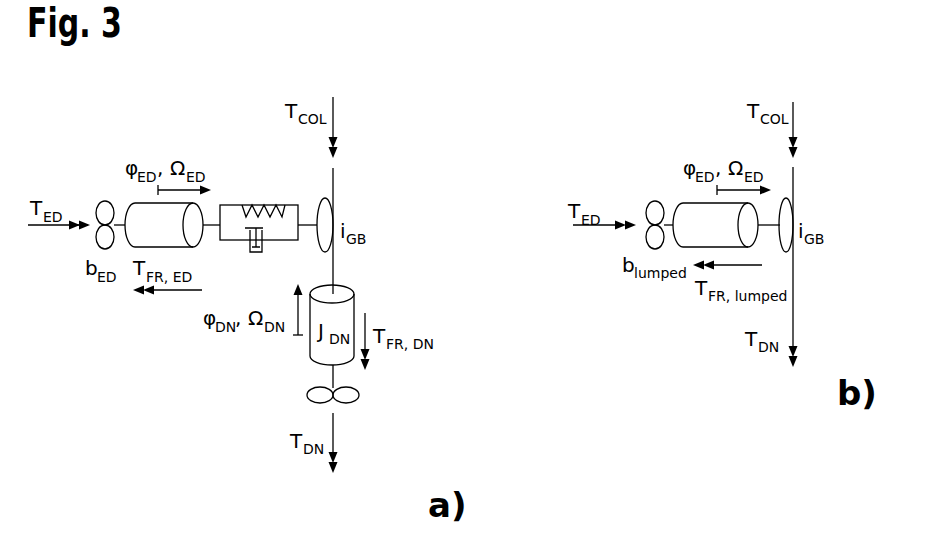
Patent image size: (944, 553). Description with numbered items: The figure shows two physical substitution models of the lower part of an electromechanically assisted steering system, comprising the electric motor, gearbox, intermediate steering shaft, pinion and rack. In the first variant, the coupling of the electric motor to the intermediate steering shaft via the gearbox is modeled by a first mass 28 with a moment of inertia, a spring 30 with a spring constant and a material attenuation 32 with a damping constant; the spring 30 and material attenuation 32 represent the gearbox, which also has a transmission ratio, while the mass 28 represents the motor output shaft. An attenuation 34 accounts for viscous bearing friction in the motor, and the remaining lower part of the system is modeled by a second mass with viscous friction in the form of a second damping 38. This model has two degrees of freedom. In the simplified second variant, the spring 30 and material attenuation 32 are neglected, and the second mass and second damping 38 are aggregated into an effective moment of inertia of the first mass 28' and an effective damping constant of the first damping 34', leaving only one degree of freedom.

In FIG. 3a, the first mass 28 is at (145, 186).
In FIG. 3a, the spring 30 is at (242, 205).
In FIG. 3a, the material attenuation 32 is at (264, 250).
In FIG. 3a, the attenuation 34 is at (72, 202).
In FIG. 3a, the second damping 38 is at (355, 400).
In FIG. 3b, the first mass 28' is at (701, 186).
In FIG. 3b, the first damping 34' is at (612, 202).